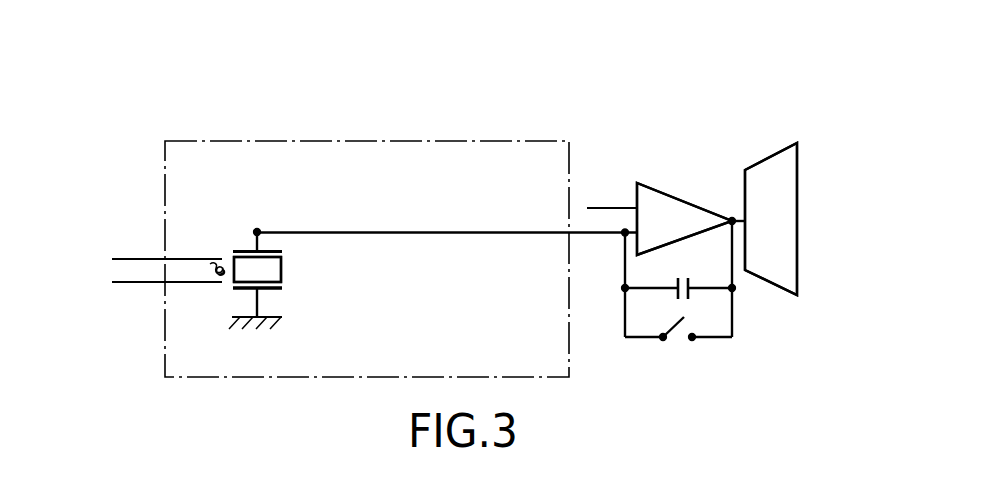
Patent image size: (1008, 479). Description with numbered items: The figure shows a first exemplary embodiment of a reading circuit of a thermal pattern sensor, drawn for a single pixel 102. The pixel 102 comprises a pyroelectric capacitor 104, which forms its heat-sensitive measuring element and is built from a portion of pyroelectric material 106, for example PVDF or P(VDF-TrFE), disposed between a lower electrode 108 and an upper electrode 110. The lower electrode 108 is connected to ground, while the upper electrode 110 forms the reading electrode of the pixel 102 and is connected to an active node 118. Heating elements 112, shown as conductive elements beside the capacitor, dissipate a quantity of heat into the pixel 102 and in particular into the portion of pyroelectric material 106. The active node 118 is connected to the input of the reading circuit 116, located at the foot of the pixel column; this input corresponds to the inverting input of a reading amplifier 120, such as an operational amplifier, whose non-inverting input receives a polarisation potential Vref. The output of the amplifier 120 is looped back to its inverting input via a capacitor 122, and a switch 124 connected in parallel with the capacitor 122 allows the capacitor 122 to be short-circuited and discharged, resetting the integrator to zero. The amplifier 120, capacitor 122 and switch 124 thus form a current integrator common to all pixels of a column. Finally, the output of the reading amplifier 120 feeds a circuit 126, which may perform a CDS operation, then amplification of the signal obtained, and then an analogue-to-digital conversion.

The pixel 102 is at (515, 141).
The pyroelectric capacitor 104 is at (283, 297).
The portion of pyroelectric material 106 is at (270, 269).
The lower electrode 108 is at (244, 291).
The upper electrode 110 is at (244, 250).
The heating elements 112 is at (210, 263).
The reading circuit 116 is at (717, 153).
The active node 118 is at (257, 229).
The reading amplifier 120 is at (668, 206).
The capacitor 122 is at (692, 296).
The switch 124 is at (693, 341).
The circuit 126 is at (785, 190).